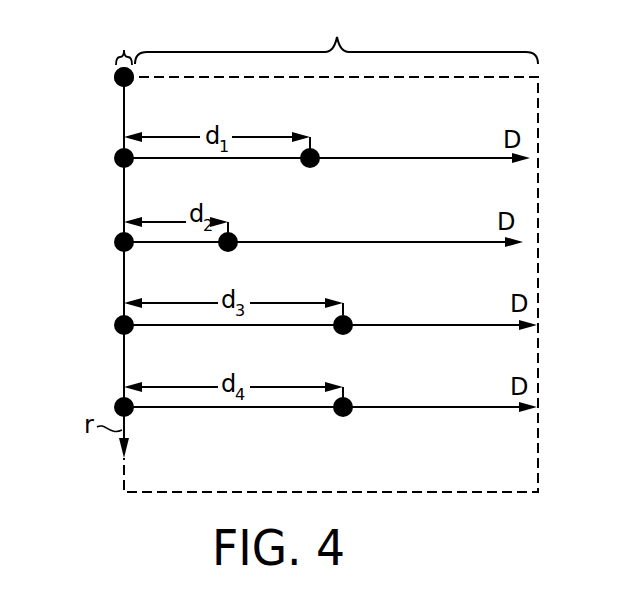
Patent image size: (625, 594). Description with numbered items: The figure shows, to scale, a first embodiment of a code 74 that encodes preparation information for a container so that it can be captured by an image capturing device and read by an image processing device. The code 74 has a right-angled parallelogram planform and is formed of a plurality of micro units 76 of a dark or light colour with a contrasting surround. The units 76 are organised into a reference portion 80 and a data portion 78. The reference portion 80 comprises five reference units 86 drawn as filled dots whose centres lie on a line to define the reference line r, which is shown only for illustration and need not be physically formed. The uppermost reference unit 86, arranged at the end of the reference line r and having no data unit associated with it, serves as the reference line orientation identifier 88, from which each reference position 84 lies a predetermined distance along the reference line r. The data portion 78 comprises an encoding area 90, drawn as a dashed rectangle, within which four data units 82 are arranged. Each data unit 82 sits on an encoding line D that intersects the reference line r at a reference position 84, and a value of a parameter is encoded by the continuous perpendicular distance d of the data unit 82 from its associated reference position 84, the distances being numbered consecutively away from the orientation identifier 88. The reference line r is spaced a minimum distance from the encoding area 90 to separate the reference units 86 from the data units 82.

The code 74 is at (511, 116).
The units 76 is at (316, 35).
The data portion 78 is at (336, 35).
The reference portion 80 is at (123, 44).
The data unit 82 is at (317, 165).
The reference position 84 is at (77, 241).
The reference unit 86 is at (114, 74).
The reference line orientation identifier 88 is at (116, 70).
The encoding area 90 is at (538, 101).